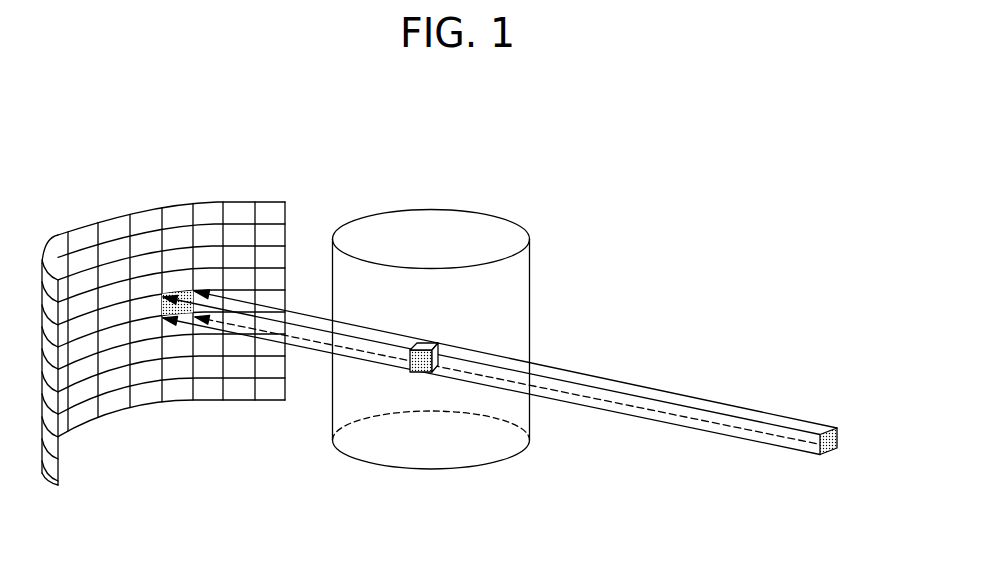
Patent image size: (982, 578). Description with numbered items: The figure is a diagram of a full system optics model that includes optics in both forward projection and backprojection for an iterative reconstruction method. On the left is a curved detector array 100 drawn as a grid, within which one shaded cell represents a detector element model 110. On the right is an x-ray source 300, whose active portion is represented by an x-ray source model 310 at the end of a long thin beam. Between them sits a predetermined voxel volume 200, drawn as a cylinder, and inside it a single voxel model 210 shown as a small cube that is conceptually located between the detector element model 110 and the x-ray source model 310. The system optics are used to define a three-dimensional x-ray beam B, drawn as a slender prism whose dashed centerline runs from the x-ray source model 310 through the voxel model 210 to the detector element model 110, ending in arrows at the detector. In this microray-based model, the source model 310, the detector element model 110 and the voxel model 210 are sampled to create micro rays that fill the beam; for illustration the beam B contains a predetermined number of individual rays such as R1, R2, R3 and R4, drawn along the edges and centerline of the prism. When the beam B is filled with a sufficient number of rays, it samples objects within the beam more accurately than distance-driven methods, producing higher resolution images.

The detector array 100 is at (236, 201).
The detector element model 110 is at (165, 306).
The predetermined voxel volume 200 is at (500, 214).
The single voxel model 210 is at (430, 344).
The x-ray source 300 is at (828, 467).
The x-ray source model 310 is at (838, 438).
The 3-D x-ray beam B is at (737, 430).
The individual ray R1 is at (661, 392).
The individual ray R2 is at (603, 378).
The individual ray R3 is at (568, 393).
The individual ray R4 is at (655, 421).